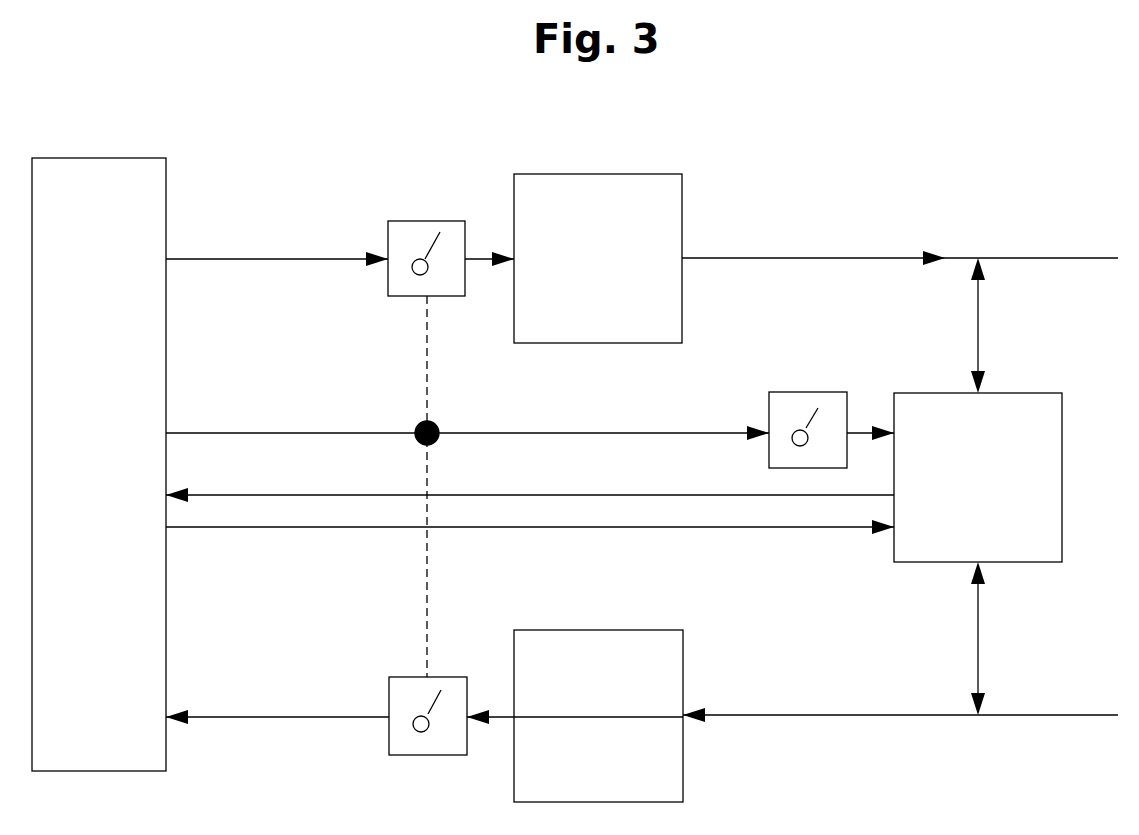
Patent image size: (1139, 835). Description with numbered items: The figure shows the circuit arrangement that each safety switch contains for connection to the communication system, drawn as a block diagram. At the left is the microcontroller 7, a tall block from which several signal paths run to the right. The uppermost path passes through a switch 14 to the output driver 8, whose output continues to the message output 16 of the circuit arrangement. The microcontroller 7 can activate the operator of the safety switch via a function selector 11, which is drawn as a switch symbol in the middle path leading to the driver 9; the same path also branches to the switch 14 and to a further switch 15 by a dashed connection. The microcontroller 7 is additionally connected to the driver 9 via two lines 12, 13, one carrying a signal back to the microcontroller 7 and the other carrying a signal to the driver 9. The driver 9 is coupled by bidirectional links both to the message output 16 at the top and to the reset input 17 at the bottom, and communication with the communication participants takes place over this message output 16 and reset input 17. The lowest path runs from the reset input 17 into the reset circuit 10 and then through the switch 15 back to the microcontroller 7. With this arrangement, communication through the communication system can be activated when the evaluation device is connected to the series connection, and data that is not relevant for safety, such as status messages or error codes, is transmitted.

The microcontroller 7 is at (87, 465).
The output driver 8 is at (676, 212).
The driver 9 is at (966, 486).
The reset circuit 10 is at (672, 775).
The function selector 11 is at (795, 404).
The line 12 is at (270, 493).
The line 13 is at (320, 528).
The switch 14 is at (452, 290).
The switch 15 is at (443, 742).
The message output 16 is at (1055, 260).
The reset input 17 is at (1028, 716).